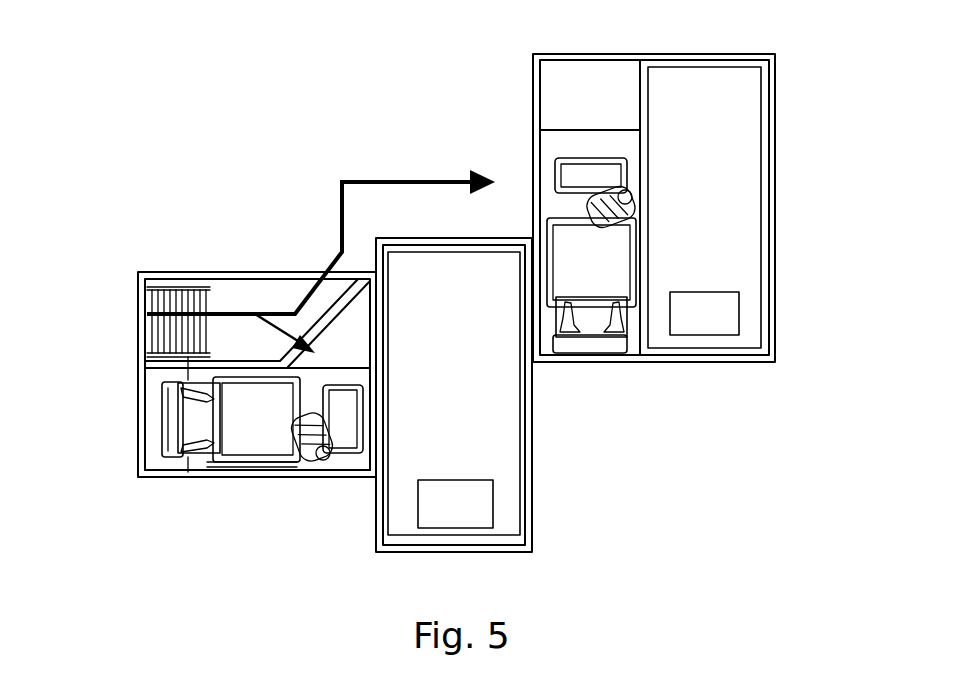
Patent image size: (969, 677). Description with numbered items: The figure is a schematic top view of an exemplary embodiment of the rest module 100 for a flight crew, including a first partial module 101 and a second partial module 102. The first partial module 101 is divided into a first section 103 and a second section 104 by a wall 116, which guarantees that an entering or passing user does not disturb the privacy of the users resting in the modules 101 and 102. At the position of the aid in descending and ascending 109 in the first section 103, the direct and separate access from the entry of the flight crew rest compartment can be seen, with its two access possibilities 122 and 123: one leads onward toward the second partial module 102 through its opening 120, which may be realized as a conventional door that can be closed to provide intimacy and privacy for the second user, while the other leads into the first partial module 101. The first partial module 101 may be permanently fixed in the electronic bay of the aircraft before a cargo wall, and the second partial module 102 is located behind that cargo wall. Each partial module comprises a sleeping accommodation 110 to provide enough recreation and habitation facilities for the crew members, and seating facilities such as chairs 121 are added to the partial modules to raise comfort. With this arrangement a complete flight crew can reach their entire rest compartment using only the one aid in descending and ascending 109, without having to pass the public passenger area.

The rest module 100 is at (148, 71).
The first partial module 101 is at (413, 198).
The second partial module 102 is at (695, 377).
The first section 103 is at (235, 292).
The second section 104 is at (178, 470).
The aid in descending and ascending 109 is at (178, 288).
The sleeping accommodation 110 is at (495, 438).
The wall 116 is at (327, 323).
The opening 120 is at (532, 165).
The chair 121 is at (260, 437).
The first access possibility 122 is at (332, 197).
The second access possibility 123 is at (282, 314).